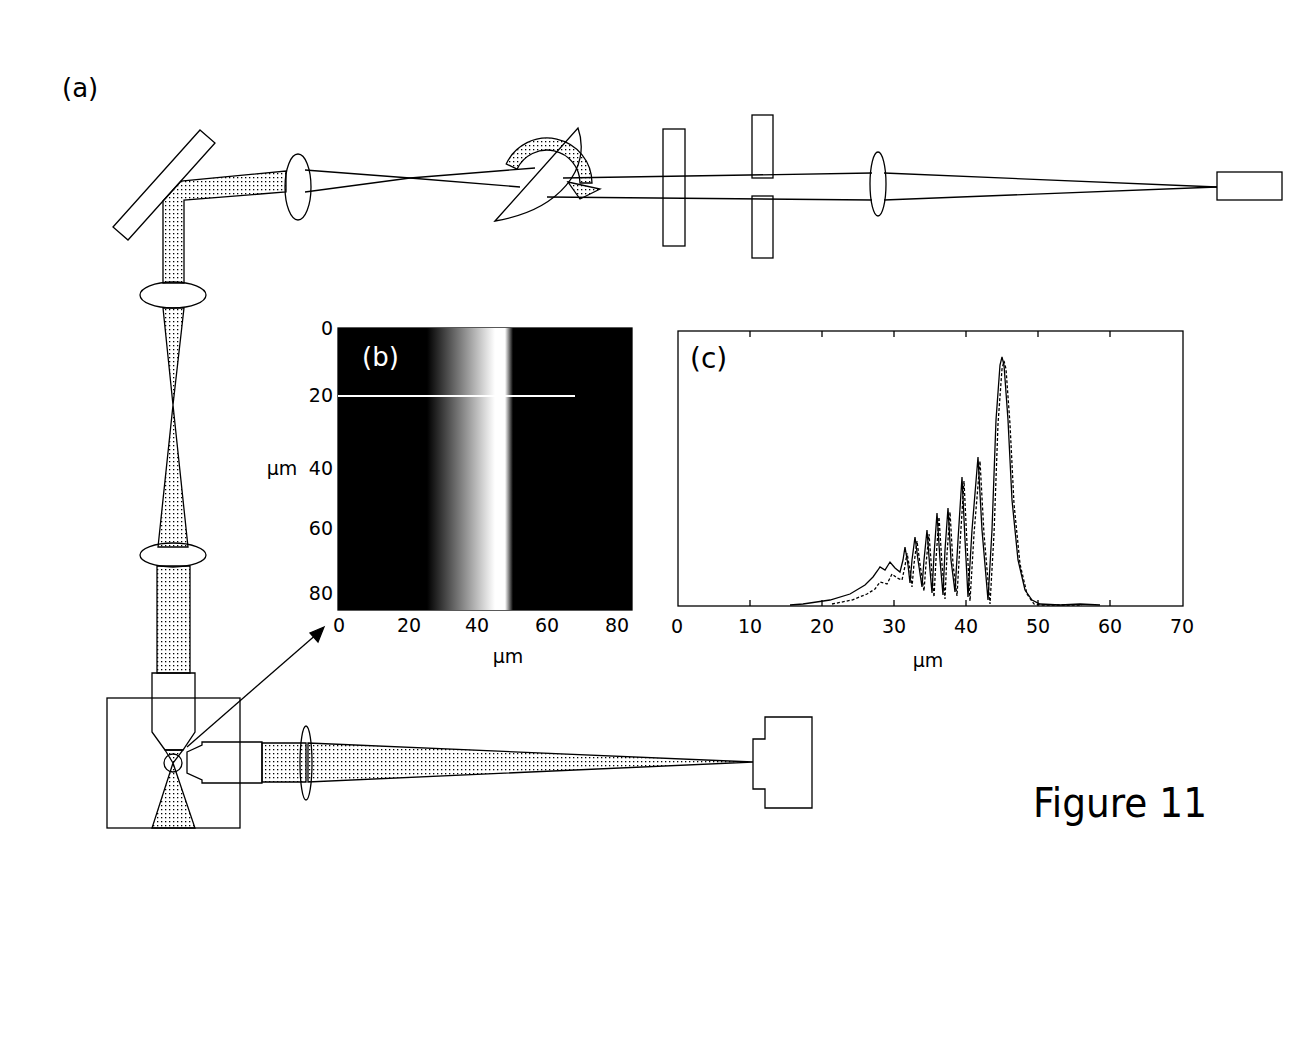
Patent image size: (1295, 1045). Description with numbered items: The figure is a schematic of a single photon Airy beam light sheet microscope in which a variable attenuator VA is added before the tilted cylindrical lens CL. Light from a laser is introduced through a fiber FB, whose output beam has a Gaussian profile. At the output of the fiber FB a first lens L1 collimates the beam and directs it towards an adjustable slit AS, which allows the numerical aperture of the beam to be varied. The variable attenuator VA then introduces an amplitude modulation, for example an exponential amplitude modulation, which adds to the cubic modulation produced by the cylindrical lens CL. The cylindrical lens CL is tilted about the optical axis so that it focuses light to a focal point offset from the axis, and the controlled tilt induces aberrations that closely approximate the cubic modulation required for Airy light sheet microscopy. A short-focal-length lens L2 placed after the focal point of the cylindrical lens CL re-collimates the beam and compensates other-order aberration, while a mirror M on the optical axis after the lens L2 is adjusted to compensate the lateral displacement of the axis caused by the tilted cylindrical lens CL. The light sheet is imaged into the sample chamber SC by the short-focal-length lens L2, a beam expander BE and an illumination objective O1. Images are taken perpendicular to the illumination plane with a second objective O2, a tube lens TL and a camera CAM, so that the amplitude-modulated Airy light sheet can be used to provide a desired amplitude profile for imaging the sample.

The mirror M is at (164, 185).
The short-focal-length lens L2 is at (300, 172).
The tilted cylindrical lens CL is at (547, 158).
The variable attenuator VA is at (673, 170).
The adjustable slit AS is at (761, 170).
The first lens L1 is at (878, 165).
The fiber FB is at (1249, 170).
The beam expander BE is at (134, 477).
The illumination objective O1 is at (131, 706).
The sample chamber SC is at (153, 763).
The second objective O2 is at (224, 805).
The tube lens TL is at (309, 782).
The camera CAM is at (782, 780).